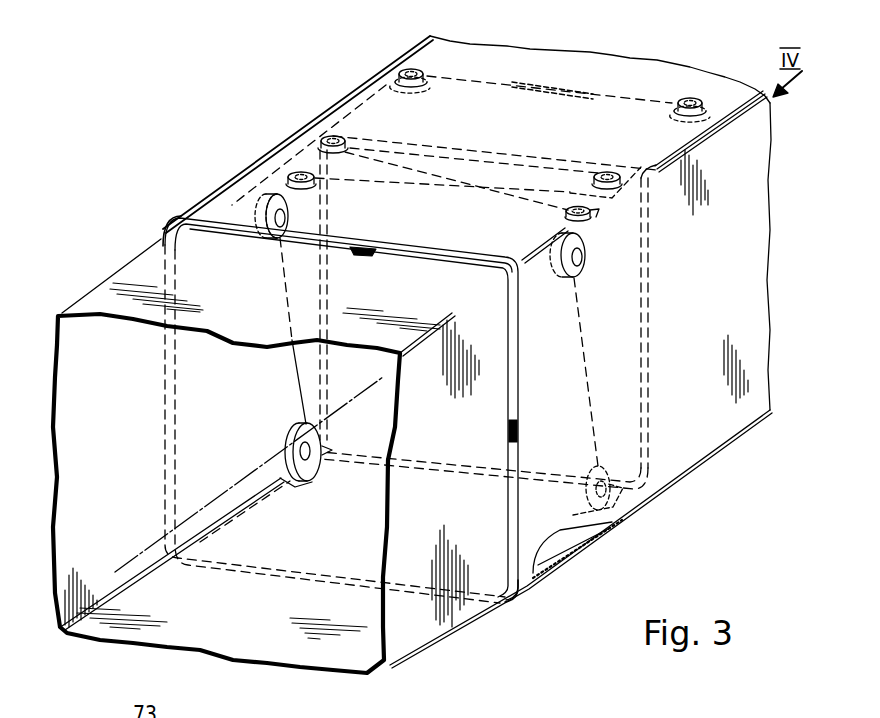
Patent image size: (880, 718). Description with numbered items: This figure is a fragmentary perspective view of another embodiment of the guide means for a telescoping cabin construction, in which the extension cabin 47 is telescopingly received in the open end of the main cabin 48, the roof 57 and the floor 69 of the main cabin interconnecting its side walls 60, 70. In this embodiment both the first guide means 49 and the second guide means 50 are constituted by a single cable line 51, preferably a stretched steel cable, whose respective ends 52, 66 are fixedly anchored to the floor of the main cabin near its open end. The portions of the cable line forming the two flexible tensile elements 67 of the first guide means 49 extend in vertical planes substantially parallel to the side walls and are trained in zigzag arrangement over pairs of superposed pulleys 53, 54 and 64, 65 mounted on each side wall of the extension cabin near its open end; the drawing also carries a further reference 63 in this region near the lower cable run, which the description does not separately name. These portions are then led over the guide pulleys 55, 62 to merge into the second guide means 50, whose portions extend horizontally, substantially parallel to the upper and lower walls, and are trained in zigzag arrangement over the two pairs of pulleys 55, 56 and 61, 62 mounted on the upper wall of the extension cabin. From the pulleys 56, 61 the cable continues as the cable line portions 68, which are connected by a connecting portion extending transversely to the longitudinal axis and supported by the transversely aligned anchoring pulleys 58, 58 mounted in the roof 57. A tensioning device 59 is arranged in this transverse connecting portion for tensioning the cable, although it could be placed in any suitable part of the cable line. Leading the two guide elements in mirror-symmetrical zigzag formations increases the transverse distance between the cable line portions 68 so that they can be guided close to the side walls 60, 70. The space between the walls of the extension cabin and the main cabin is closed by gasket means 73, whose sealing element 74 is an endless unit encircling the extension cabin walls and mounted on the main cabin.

The extension cabin 47 is at (428, 651).
The main cabin 48 is at (722, 456).
The first guide means 49 is at (601, 392).
The second guide means 50 is at (445, 170).
The cable line 51 is at (578, 537).
The end of cable line 52 is at (218, 542).
The pulley 53 is at (287, 440).
The pulley 54 is at (285, 214).
The pulley 55 is at (312, 186).
The pulley 56 is at (612, 174).
The roof 57 is at (610, 63).
The anchoring pulley 58 is at (427, 75).
The tensioning device 59 is at (547, 83).
The side wall 60 is at (160, 234).
The pulley 61 is at (378, 152).
The pulley 62 is at (565, 210).
The center axis line 63 is at (138, 554).
The pulley 64 is at (580, 268).
The pulley 65 is at (585, 491).
The end of cable line 66 is at (535, 566).
The flexible tensile element 67 is at (357, 123).
The cable line portion 68 is at (390, 82).
The floor 69 is at (498, 605).
The side wall 70 is at (760, 287).
The gasket means 73 is at (505, 422).
The sealing element 74 is at (507, 352).